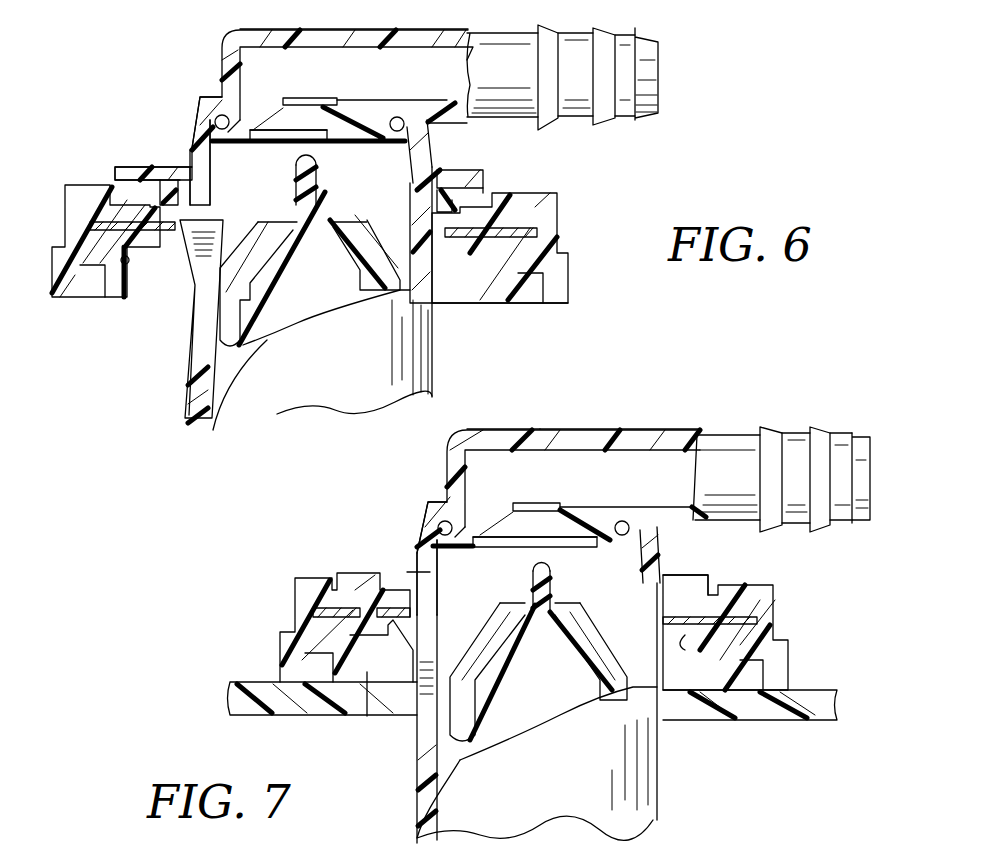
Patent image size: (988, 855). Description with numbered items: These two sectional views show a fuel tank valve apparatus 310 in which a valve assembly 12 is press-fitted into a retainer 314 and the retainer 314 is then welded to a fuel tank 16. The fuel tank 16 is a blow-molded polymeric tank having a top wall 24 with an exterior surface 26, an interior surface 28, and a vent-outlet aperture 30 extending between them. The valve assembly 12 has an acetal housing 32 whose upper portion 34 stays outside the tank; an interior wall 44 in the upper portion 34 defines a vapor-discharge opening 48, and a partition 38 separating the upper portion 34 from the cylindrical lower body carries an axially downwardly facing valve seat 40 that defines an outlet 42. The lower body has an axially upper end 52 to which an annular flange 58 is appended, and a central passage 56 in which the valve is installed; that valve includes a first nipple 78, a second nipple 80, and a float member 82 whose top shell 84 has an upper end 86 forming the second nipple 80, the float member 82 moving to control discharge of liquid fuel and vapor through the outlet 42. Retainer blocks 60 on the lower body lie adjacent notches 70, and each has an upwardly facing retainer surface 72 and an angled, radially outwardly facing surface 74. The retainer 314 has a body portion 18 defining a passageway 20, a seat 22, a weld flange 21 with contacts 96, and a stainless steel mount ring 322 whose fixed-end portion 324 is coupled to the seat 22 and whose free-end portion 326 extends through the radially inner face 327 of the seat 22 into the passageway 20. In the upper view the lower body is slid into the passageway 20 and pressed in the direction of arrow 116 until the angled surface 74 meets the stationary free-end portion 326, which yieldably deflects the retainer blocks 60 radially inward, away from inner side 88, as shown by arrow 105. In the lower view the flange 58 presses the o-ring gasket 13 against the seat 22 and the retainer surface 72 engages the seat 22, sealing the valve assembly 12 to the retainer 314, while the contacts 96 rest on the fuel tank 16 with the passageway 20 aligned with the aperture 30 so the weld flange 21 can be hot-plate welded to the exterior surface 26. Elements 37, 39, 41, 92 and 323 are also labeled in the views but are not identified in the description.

In FIG. 6, the valve assembly 12 is at (196, 50).
In FIG. 7, the valve assembly 12 is at (424, 470).
In FIG. 6, the o-ring gasket 13 is at (480, 185).
In FIG. 7, the o-ring gasket 13 is at (400, 580).
In FIG. 7, the fuel tank 16 is at (228, 710).
In FIG. 7, the body portion 18 is at (290, 592).
In FIG. 6, the passageway 20 is at (162, 292).
In FIG. 7, the passageway 20 is at (362, 682).
In FIG. 6, the weld flange 21 is at (80, 260).
In FIG. 7, the weld flange 21 is at (790, 655).
In FIG. 6, the seat 22 is at (130, 210).
In FIG. 7, the top wall 24 is at (222, 683).
In FIG. 7, the exterior surface 26 is at (237, 683).
In FIG. 7, the interior surface 28 is at (250, 716).
In FIG. 6, the vent-outlet aperture 30 is at (480, 297).
In FIG. 7, the vent-outlet aperture 30 is at (680, 735).
In FIG. 6, the housing 32 is at (638, 32).
In FIG. 7, the housing 32 is at (832, 422).
In FIG. 6, the upper portion 34 is at (515, 33).
In FIG. 7, the upper portion 34 is at (725, 420).
In FIG. 6, the cap side wall 37 is at (203, 102).
In FIG. 7, the cap side wall 37 is at (428, 496).
In FIG. 6, the partition 38 is at (268, 112).
In FIG. 7, the partition 38 is at (481, 528).
In FIG. 6, the cap top wall 39 is at (268, 36).
In FIG. 7, the cap top wall 39 is at (500, 437).
In FIG. 6, the valve seat 40 is at (322, 135).
In FIG. 7, the valve seat 40 is at (535, 550).
In FIG. 6, the hose fitting 41 is at (523, 62).
In FIG. 7, the hose fitting 41 is at (740, 440).
In FIG. 6, the outlet 42 is at (315, 97).
In FIG. 7, the outlet 42 is at (534, 503).
In FIG. 6, the interior wall 44 is at (398, 52).
In FIG. 7, the interior wall 44 is at (660, 444).
In FIG. 6, the vapor-discharge opening 48 is at (658, 92).
In FIG. 7, the vapor-discharge opening 48 is at (866, 510).
In FIG. 6, the axially upper end 52 is at (430, 152).
In FIG. 7, the axially upper end 52 is at (652, 560).
In FIG. 6, the central passage 56 is at (222, 158).
In FIG. 7, the central passage 56 is at (450, 553).
In FIG. 6, the annular flange 58 is at (500, 185).
In FIG. 7, the annular flange 58 is at (403, 590).
In FIG. 6, the retainer blocks 60 is at (205, 295).
In FIG. 7, the retainer blocks 60 is at (423, 655).
In FIG. 6, the notches 70 is at (208, 214).
In FIG. 7, the notches 70 is at (445, 610).
In FIG. 6, the retainer surface 72 is at (251, 156).
In FIG. 6, the angled surface 74 is at (190, 321).
In FIG. 7, the angled surface 74 is at (405, 729).
In FIG. 6, the first nipple 78 is at (330, 182).
In FIG. 7, the first nipple 78 is at (553, 583).
In FIG. 6, the second nipple 80 is at (340, 205).
In FIG. 7, the second nipple 80 is at (560, 605).
In FIG. 6, the float member 82 is at (262, 345).
In FIG. 7, the float member 82 is at (486, 748).
In FIG. 6, the top shell 84 is at (322, 305).
In FIG. 7, the top shell 84 is at (580, 700).
In FIG. 6, the upper end 86 is at (303, 248).
In FIG. 7, the upper end 86 is at (545, 650).
In FIG. 6, the inner side 88 is at (88, 248).
In FIG. 7, the shoulder 92 is at (322, 600).
In FIG. 6, the contacts 96 is at (105, 300).
In FIG. 7, the contacts 96 is at (295, 698).
In FIG. 6, the arrow 105 is at (197, 273).
In FIG. 6, the arrow 116 is at (320, 382).
In FIG. 6, the fuel tank valve apparatus 310 is at (685, 75).
In FIG. 7, the fuel tank valve apparatus 310 is at (260, 540).
In FIG. 6, the retainer 314 is at (85, 160).
In FIG. 7, the retainer 314 is at (318, 568).
In FIG. 6, the mount ring 322 is at (458, 240).
In FIG. 7, the mount ring 322 is at (350, 590).
In FIG. 6, the lower groove 323 is at (140, 296).
In FIG. 6, the fixed-end portion 324 is at (95, 205).
In FIG. 7, the fixed-end portion 324 is at (300, 625).
In FIG. 6, the free-end portion 326 is at (205, 200).
In FIG. 7, the free-end portion 326 is at (440, 610).
In FIG. 6, the radially inner face 327 is at (450, 250).
In FIG. 7, the radially inner face 327 is at (692, 658).